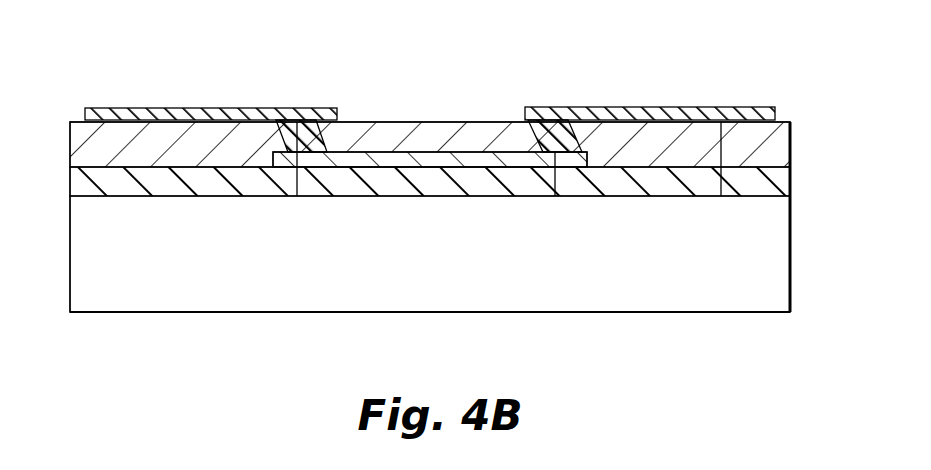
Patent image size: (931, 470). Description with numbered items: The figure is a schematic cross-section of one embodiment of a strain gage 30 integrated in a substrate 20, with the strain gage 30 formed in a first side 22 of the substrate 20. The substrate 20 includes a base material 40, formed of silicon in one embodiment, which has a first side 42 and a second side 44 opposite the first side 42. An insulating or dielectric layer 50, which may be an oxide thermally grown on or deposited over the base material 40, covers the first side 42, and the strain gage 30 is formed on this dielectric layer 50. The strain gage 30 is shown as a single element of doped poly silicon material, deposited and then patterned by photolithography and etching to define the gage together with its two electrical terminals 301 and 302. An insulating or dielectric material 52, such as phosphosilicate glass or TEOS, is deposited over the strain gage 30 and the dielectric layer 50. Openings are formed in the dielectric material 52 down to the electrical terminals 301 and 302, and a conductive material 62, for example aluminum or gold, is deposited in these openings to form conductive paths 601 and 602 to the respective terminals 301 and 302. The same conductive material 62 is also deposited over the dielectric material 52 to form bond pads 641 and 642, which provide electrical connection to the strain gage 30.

The substrate 20 is at (430, 214).
The first side 22 is at (788, 122).
The strain gage 30 is at (437, 160).
The electrical terminal 301 is at (555, 196).
The electrical terminal 302 is at (297, 196).
The base material 40 is at (797, 196).
The first side 42 is at (721, 122).
The second side 44 is at (692, 312).
The dielectric layer 50 is at (797, 167).
The dielectric material 52 is at (797, 122).
The conductive material 62 is at (297, 120).
The conductive path 601 is at (519, 92).
The conductive path 602 is at (352, 102).
The bond pad 641 is at (653, 107).
The bond pad 642 is at (175, 108).